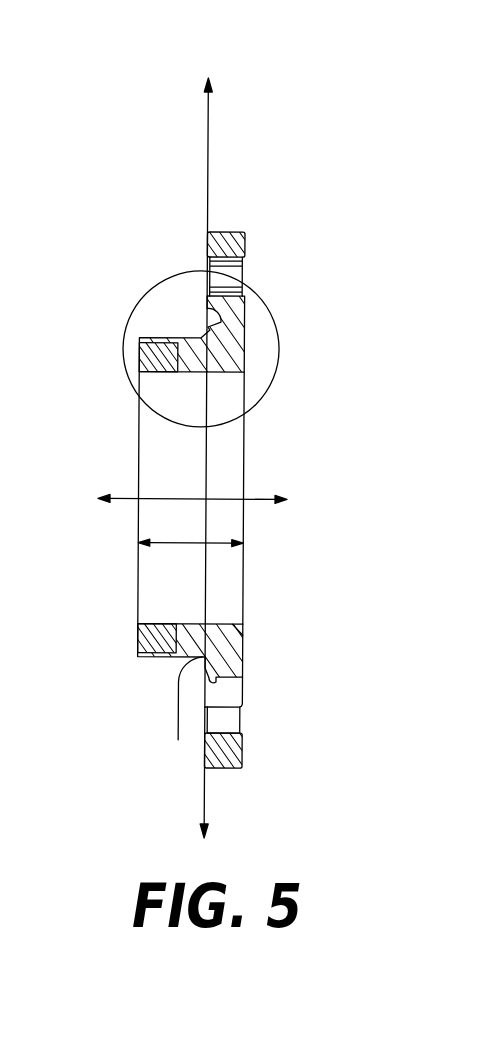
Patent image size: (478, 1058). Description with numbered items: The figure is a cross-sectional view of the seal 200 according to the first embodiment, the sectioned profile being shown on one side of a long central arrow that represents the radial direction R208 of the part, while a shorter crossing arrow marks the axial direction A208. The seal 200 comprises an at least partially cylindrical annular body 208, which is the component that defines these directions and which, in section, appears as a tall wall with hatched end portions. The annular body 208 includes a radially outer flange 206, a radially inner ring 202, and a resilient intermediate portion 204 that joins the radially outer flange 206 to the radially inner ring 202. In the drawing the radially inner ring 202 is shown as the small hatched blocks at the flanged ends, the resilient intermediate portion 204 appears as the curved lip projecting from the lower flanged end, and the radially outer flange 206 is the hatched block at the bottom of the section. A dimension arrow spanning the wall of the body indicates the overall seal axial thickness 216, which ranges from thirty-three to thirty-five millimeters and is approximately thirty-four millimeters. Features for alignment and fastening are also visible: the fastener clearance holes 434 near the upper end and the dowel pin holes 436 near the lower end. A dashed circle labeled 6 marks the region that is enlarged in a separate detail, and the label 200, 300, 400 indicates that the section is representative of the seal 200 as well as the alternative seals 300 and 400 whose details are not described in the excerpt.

The seal 200 is at (244, 442).
The mounting assembly 300 is at (244, 442).
The mounting assembly 400 is at (244, 442).
The radially inner ring 202 is at (136, 638).
The resilient intermediate portion 204 is at (179, 738).
The radially outer flange 206 is at (230, 758).
The at least partially cylindrical annular body 208 is at (229, 229).
The overall seal axial thickness 216 is at (193, 543).
The fastener clearance holes 434 is at (243, 278).
The dowel pin holes 436 is at (228, 722).
The detail circle FIG. 6 is at (150, 292).
The radial direction R208 is at (207, 143).
The axial direction A208 is at (263, 499).